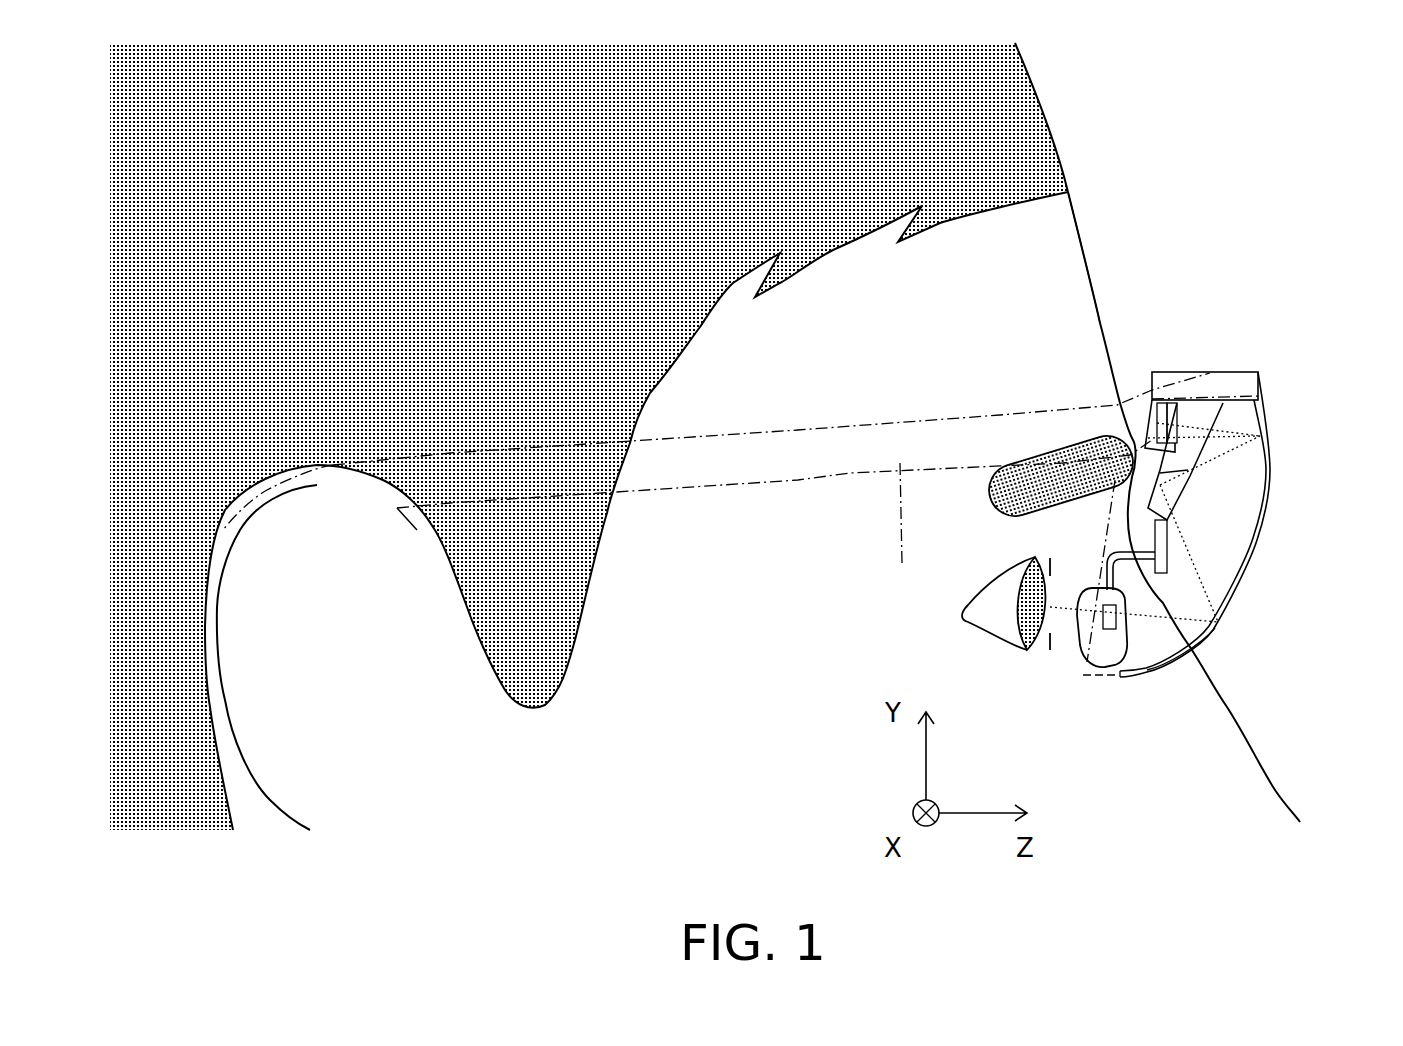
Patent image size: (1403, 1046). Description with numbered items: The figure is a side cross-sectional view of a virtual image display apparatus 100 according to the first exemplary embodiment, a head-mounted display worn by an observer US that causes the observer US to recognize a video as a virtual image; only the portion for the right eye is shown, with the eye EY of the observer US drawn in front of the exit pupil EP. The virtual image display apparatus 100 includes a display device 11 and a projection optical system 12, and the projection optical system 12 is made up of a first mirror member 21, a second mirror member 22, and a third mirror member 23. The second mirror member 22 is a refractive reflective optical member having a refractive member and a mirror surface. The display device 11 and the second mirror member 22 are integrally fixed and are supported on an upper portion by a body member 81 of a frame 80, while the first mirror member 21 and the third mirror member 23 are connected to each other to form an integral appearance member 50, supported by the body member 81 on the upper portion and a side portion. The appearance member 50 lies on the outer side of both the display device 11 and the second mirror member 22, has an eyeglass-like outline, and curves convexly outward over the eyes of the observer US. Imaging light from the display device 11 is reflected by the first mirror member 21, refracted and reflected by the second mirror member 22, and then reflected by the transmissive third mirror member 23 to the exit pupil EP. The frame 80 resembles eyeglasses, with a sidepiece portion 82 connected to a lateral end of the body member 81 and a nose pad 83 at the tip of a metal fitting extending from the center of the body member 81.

The virtual image display apparatus 100 is at (1236, 499).
The display device 11 is at (1175, 408).
The projection optical system 12 is at (1238, 417).
The first mirror member 21 is at (1268, 393).
The second mirror member 22 is at (1193, 490).
The third mirror member 23 is at (1265, 575).
The appearance member 50 is at (1257, 525).
The frame 80 is at (985, 412).
The body member 81 is at (1213, 383).
The sidepiece portion 82 is at (774, 517).
The nose pad 83 is at (1108, 655).
The observer US is at (1100, 327).
The eye EY is at (1027, 582).
The exit pupil EP is at (1052, 580).